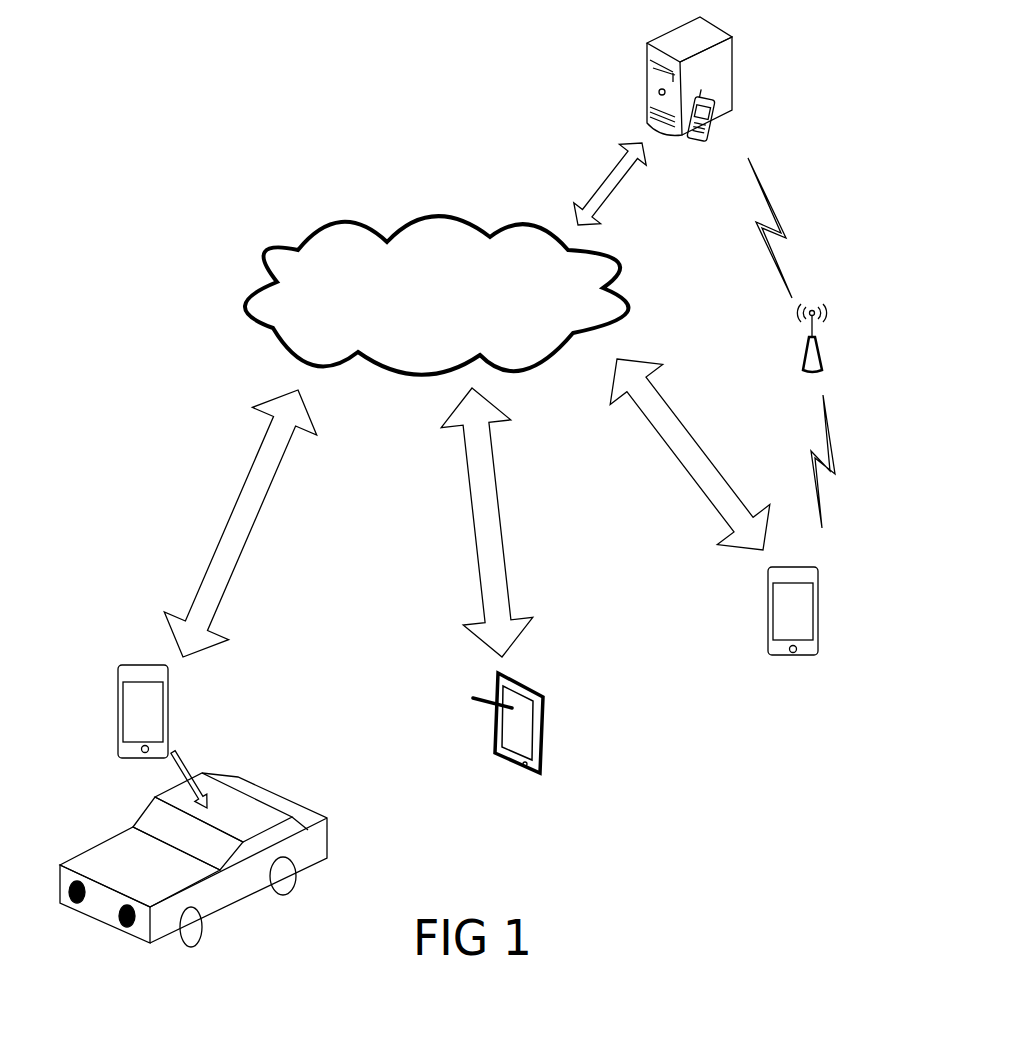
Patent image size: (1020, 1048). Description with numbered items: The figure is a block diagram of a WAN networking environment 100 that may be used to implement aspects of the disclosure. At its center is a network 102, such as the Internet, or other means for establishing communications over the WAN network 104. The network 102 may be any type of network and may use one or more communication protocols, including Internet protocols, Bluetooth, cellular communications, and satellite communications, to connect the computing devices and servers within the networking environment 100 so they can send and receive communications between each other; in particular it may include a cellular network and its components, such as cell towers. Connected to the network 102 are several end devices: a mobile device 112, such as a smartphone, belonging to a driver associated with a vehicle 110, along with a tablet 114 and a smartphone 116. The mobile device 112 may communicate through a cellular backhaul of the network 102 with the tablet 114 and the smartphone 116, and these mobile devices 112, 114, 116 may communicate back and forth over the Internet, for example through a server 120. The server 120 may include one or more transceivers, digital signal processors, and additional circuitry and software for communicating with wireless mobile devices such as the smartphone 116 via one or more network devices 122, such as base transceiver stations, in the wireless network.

The WAN networking environment 100 is at (168, 182).
The network 102 is at (237, 315).
The WAN network 104 is at (227, 518).
The vehicle 110 is at (277, 793).
The mobile device 112 is at (107, 717).
The tablet 114 is at (472, 723).
The smartphone 116 is at (757, 628).
The server 120 is at (613, 65).
The network device 122 is at (793, 360).